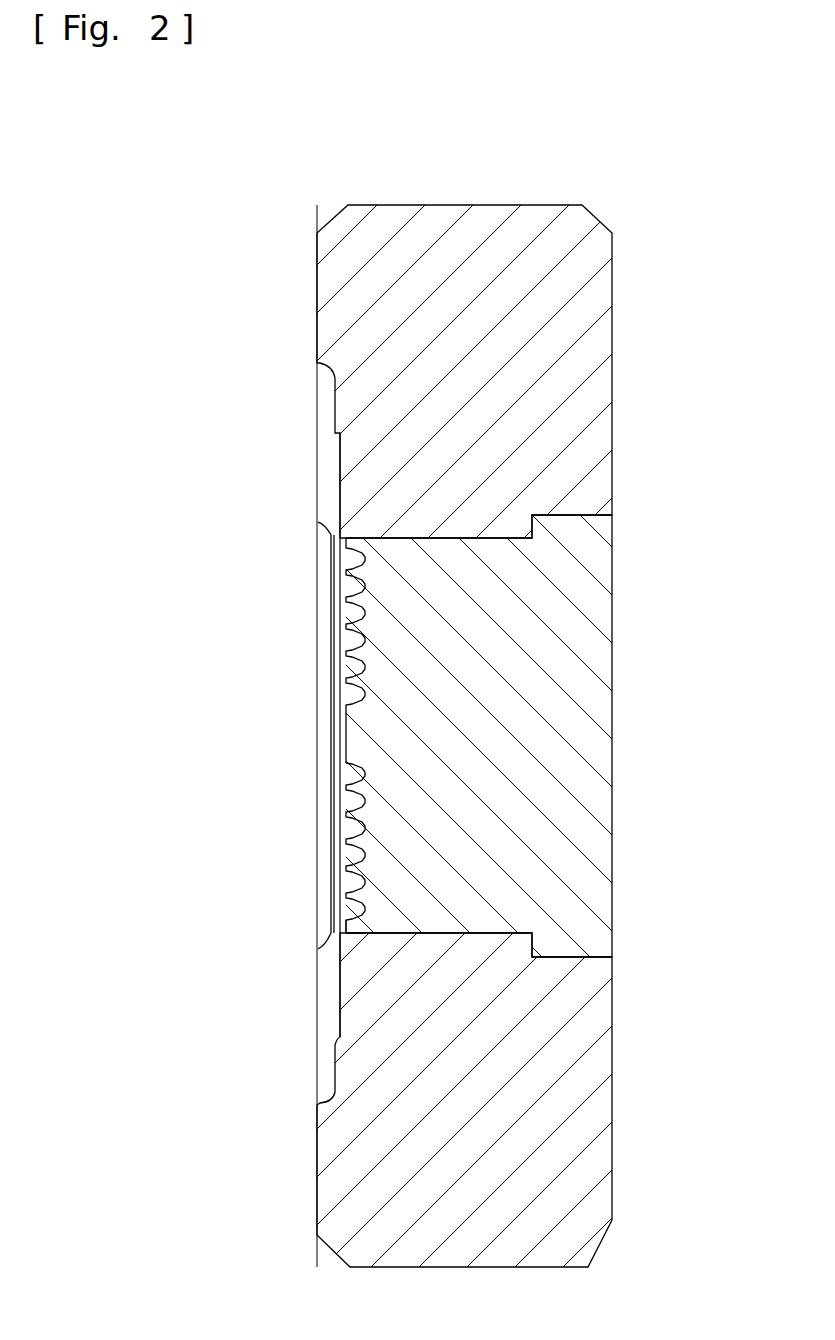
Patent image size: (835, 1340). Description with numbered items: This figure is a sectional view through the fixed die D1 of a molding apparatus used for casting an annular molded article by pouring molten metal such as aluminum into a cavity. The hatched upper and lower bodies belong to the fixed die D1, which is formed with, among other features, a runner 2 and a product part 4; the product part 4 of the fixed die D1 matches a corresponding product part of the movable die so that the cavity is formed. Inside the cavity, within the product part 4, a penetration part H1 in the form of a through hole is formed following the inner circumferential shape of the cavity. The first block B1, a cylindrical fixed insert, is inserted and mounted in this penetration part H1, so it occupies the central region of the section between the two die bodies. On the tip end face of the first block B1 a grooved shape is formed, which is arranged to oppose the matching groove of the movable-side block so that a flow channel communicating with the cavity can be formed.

The fixed die D1 is at (614, 392).
The first block B1 is at (595, 737).
The runner 2 is at (330, 782).
The product part 4 is at (340, 503).
The penetration part H1 is at (403, 929).